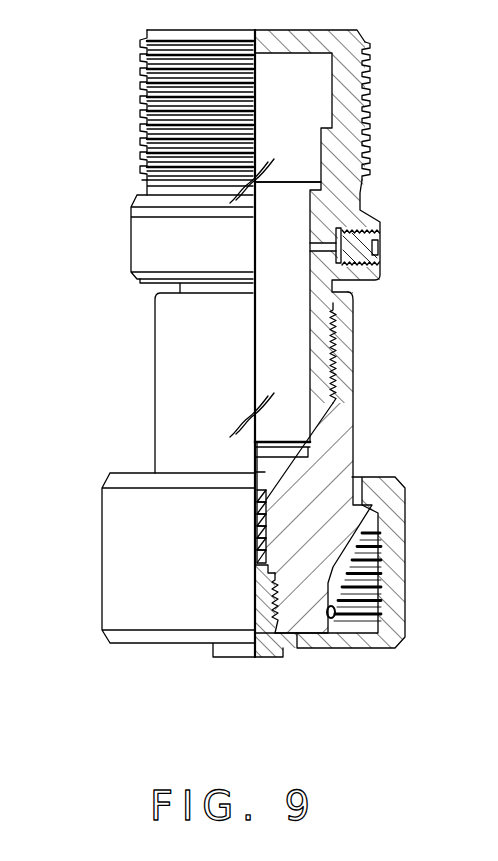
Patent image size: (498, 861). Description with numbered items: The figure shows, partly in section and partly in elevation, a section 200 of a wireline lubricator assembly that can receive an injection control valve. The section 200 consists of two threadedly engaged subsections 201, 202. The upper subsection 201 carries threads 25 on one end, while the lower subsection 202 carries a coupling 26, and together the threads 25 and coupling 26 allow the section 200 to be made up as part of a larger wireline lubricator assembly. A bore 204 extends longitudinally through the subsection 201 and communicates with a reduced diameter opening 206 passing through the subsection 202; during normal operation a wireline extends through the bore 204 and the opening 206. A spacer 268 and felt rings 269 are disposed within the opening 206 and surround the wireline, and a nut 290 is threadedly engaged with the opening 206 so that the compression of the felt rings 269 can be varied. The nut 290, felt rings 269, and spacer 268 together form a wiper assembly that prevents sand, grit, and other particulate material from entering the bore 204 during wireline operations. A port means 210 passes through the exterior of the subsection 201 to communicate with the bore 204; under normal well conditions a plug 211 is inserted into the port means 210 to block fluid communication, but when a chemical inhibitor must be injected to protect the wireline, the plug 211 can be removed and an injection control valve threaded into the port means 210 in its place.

The section of wireline lubricator assembly 200 is at (97, 117).
The threads 25 is at (368, 46).
The subsection 201 is at (136, 240).
The bore 204 is at (303, 294).
The port means 210 is at (380, 224).
The plug 211 is at (378, 250).
The subsection 202 is at (347, 418).
The coupling 26 is at (396, 497).
The spacer 268 is at (257, 495).
The felt rings 269 is at (257, 556).
The reduced diameter opening 206 is at (257, 565).
The nut 290 is at (285, 652).